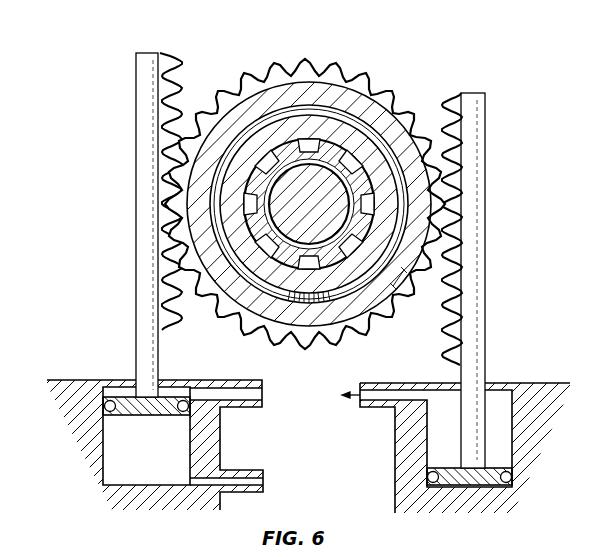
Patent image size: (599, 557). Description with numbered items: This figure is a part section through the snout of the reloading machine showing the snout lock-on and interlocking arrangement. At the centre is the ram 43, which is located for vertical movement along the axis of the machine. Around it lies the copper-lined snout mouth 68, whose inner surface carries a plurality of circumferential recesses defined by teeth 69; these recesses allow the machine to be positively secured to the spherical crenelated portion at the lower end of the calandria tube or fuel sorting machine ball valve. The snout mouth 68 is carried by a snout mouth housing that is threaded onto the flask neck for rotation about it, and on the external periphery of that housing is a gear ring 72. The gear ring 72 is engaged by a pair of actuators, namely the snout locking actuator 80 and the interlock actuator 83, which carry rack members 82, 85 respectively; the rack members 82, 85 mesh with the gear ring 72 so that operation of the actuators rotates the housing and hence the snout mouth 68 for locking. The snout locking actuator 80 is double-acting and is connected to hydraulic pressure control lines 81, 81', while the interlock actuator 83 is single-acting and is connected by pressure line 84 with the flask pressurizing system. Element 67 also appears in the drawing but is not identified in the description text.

The ram 43 is at (318, 207).
The spring band 67 is at (270, 266).
The snout mouth 68 is at (296, 126).
The teeth 69 is at (356, 156).
The gear ring 72 is at (273, 338).
The snout locking actuator 80 is at (270, 447).
The hydraulic pressure control line 81 is at (241, 411).
The hydraulic pressure control line 81' is at (252, 489).
The rack member 82 is at (160, 54).
The interlock actuator 83 is at (380, 481).
The pressure line 84 is at (402, 393).
The rack member 85 is at (486, 197).